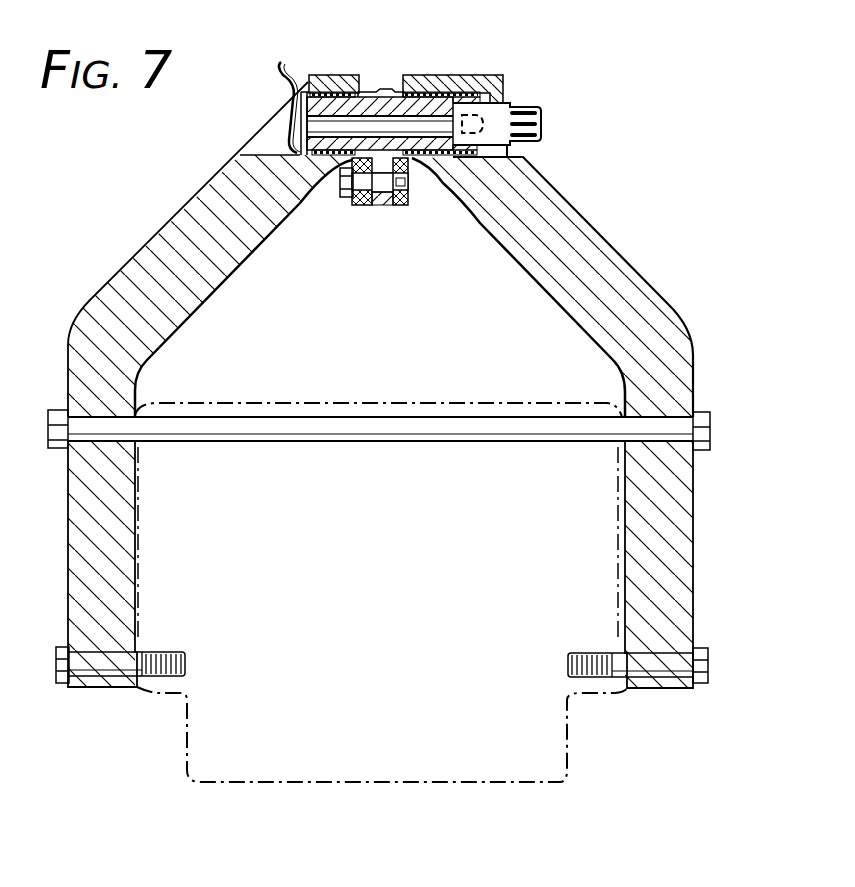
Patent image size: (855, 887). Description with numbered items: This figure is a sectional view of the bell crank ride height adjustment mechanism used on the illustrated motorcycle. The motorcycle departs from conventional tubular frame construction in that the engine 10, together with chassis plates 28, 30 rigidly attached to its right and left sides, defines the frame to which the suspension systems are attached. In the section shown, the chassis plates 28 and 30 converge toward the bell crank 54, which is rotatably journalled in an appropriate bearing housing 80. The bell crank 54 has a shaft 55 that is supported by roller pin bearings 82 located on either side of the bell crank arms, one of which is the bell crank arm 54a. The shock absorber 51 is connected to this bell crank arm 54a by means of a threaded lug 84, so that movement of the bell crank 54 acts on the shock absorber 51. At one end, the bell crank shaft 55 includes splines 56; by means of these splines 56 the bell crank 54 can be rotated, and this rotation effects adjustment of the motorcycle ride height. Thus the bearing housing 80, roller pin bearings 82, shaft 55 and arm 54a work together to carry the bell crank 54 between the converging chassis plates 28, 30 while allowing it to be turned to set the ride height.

The engine 10 is at (437, 783).
The chassis plate 28 is at (617, 275).
The chassis plate 30 is at (173, 220).
The shock absorber 51 is at (358, 203).
The bell crank 54 is at (540, 120).
The bell crank arm 54a is at (383, 207).
The shaft 55 is at (390, 93).
The splines 56 is at (518, 103).
The bearing housing 80 is at (337, 77).
The roller pin bearings 82 is at (281, 63).
The threaded lug 84 is at (340, 195).